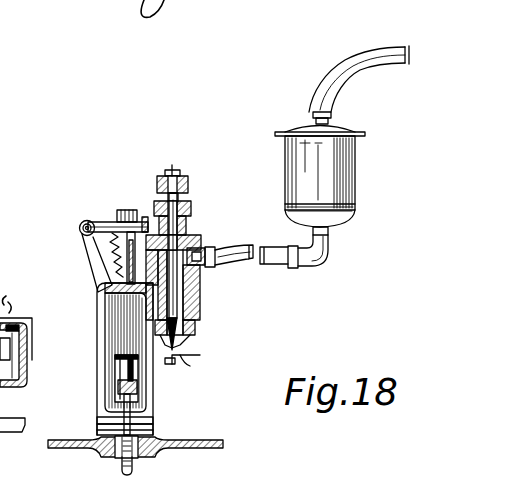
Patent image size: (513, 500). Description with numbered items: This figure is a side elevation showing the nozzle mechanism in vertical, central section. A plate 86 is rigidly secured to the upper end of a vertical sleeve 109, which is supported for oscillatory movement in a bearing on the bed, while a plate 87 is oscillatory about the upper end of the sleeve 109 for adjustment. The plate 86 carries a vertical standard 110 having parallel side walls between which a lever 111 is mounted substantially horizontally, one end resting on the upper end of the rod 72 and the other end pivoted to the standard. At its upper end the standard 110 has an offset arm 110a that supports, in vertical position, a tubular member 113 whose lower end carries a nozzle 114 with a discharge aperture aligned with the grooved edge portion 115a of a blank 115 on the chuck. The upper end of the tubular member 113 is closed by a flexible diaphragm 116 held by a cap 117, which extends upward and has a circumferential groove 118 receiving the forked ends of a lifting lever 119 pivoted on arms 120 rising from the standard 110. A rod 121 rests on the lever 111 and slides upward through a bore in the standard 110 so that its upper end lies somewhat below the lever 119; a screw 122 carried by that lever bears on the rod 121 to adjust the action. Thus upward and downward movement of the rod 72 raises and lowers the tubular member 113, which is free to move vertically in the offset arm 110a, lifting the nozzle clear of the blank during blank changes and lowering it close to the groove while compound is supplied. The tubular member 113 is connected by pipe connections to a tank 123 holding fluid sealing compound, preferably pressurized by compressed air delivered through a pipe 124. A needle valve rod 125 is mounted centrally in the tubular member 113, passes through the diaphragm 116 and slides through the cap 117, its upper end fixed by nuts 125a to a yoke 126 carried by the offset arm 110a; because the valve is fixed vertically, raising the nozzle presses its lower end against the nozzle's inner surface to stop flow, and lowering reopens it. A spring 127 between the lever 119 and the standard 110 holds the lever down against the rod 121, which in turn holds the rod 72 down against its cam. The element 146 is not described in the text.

The rod 72 is at (133, 468).
The plate 86 is at (152, 433).
The plate 87 is at (103, 420).
The vertical sleeve 109 is at (118, 448).
The standard 110 is at (101, 312).
The offset arm 110a is at (198, 326).
The lever 111 is at (133, 389).
The tubular member 113 is at (196, 292).
The nozzle 114 is at (179, 352).
The blank 115 is at (191, 363).
The grooved edge portion 115a is at (204, 357).
The flexible diaphragm 116 is at (200, 237).
The cap 117 is at (240, 245).
The circumferential groove 118 is at (192, 212).
The lifting lever 119 is at (105, 222).
The arms 120 is at (93, 258).
The rod 121 is at (124, 372).
The screw 122 is at (127, 209).
The tank 123 is at (355, 153).
The pipe 124 is at (396, 31).
The needle valve rod 125 is at (200, 306).
The nuts 125a is at (165, 188).
The yoke 126 is at (187, 183).
The spring 127 is at (103, 262).
The bracket 146 is at (48, 416).